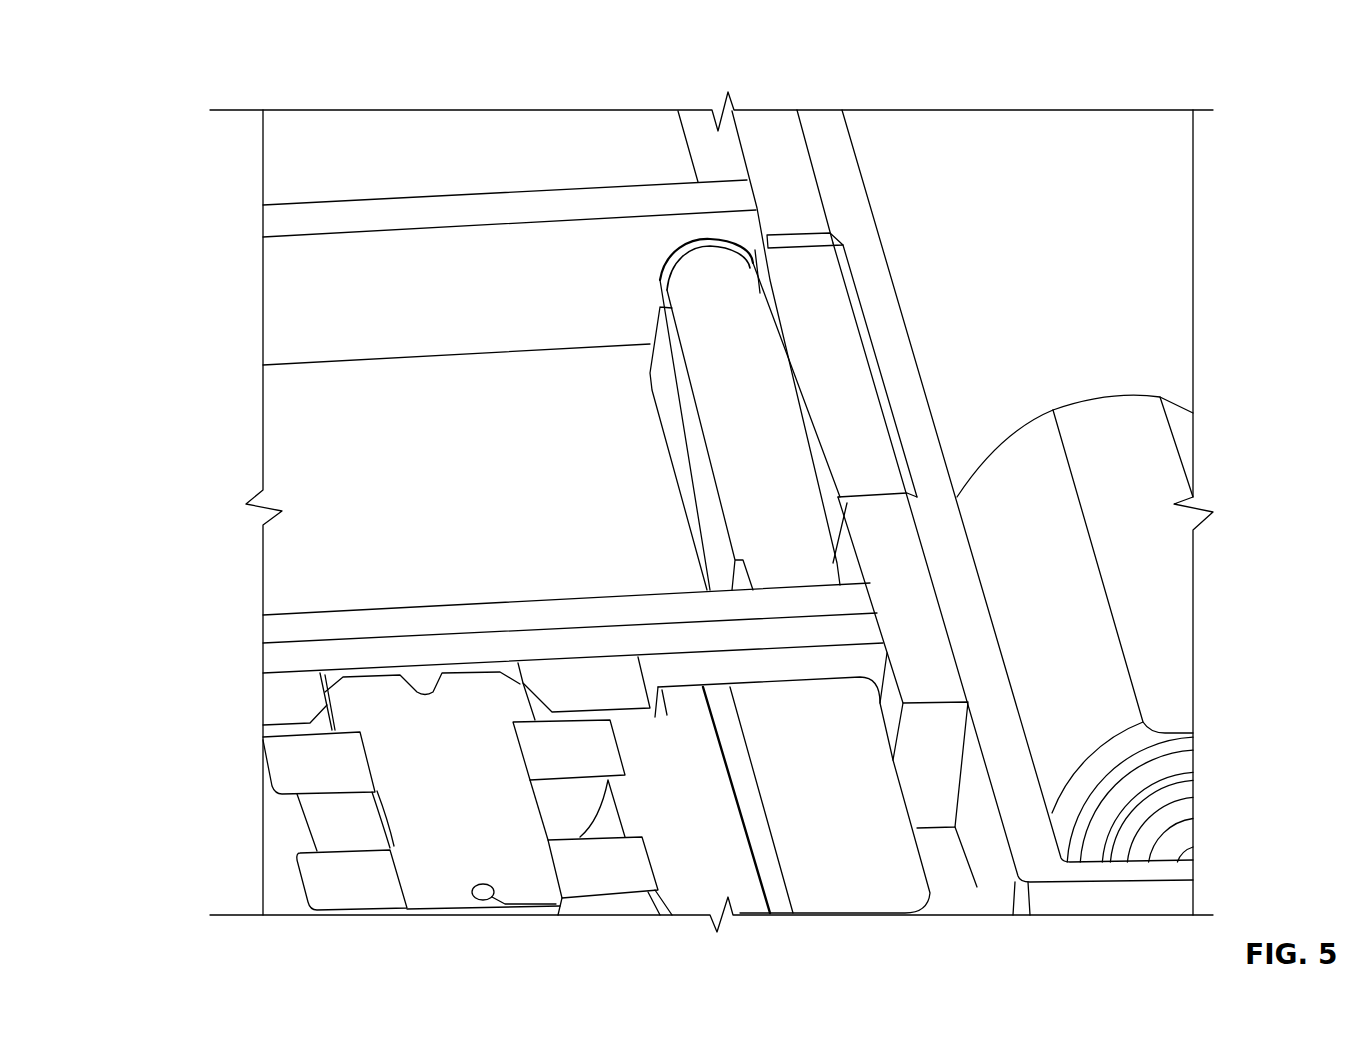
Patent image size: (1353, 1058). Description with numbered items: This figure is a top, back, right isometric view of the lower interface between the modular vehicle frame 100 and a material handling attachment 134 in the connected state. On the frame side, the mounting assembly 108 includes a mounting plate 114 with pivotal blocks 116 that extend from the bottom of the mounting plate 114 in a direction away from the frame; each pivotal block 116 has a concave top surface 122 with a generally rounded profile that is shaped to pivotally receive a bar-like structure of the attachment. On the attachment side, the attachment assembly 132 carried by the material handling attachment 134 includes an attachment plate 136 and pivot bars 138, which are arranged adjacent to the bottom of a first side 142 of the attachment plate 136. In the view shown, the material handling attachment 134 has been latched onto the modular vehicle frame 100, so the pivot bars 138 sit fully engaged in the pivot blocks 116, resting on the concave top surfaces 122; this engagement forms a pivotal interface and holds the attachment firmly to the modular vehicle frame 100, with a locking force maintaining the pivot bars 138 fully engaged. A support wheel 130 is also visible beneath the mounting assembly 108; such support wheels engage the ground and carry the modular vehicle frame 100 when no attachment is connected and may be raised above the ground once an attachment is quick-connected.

The modular vehicle frame 100 is at (232, 76).
The mounting assembly 108 is at (947, 177).
The mounting plate 114 is at (885, 295).
The pivotal blocks 116 is at (848, 357).
The concave top surface 122 is at (710, 455).
The support wheels 130 is at (1004, 452).
The attachment assembly 132 is at (508, 88).
The material handling attachment 134 is at (368, 77).
The attachment plate 136 is at (760, 108).
The pivot bars 138 is at (713, 382).
The first side 142 is at (707, 137).